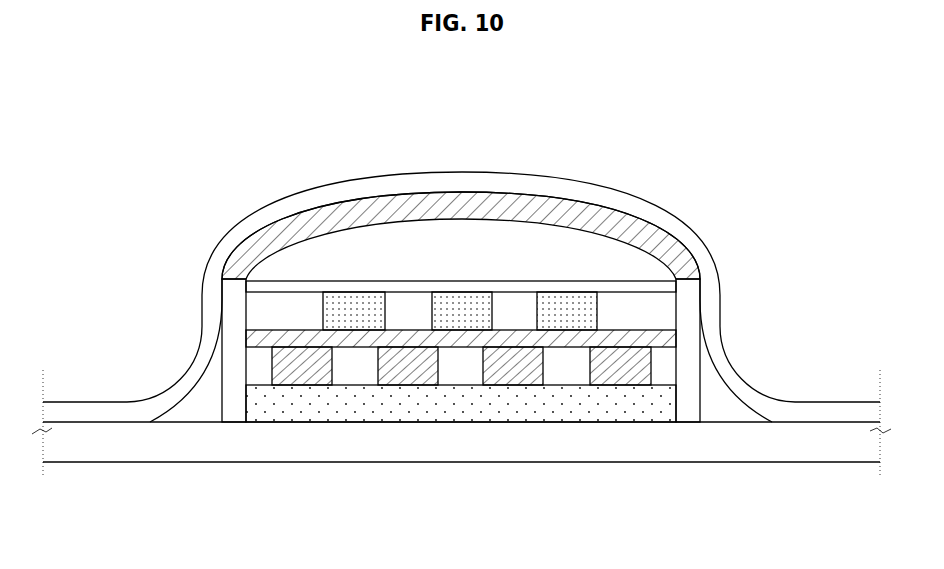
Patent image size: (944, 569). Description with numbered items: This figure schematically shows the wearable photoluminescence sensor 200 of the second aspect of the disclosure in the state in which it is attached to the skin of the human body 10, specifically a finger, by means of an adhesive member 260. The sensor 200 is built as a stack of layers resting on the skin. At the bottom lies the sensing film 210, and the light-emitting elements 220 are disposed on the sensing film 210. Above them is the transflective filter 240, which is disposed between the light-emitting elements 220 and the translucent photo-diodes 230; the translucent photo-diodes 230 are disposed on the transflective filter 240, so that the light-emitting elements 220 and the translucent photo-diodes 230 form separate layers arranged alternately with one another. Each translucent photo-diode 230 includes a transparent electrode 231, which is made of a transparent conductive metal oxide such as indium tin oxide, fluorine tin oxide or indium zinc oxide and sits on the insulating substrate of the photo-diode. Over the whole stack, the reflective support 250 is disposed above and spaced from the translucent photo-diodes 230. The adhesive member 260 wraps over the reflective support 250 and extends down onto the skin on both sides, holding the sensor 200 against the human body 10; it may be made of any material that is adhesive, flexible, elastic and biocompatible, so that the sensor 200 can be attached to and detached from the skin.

The human body 10 is at (341, 437).
The wearable photoluminescence sensor 200 is at (461, 301).
The sensing film 210 is at (488, 403).
The light-emitting element 220 is at (515, 368).
The translucent photo-diode 230 is at (458, 303).
The transparent electrode 231 is at (304, 283).
The transflective filter 240 is at (510, 338).
The reflective support 250 is at (578, 220).
The adhesive member 260 is at (642, 210).